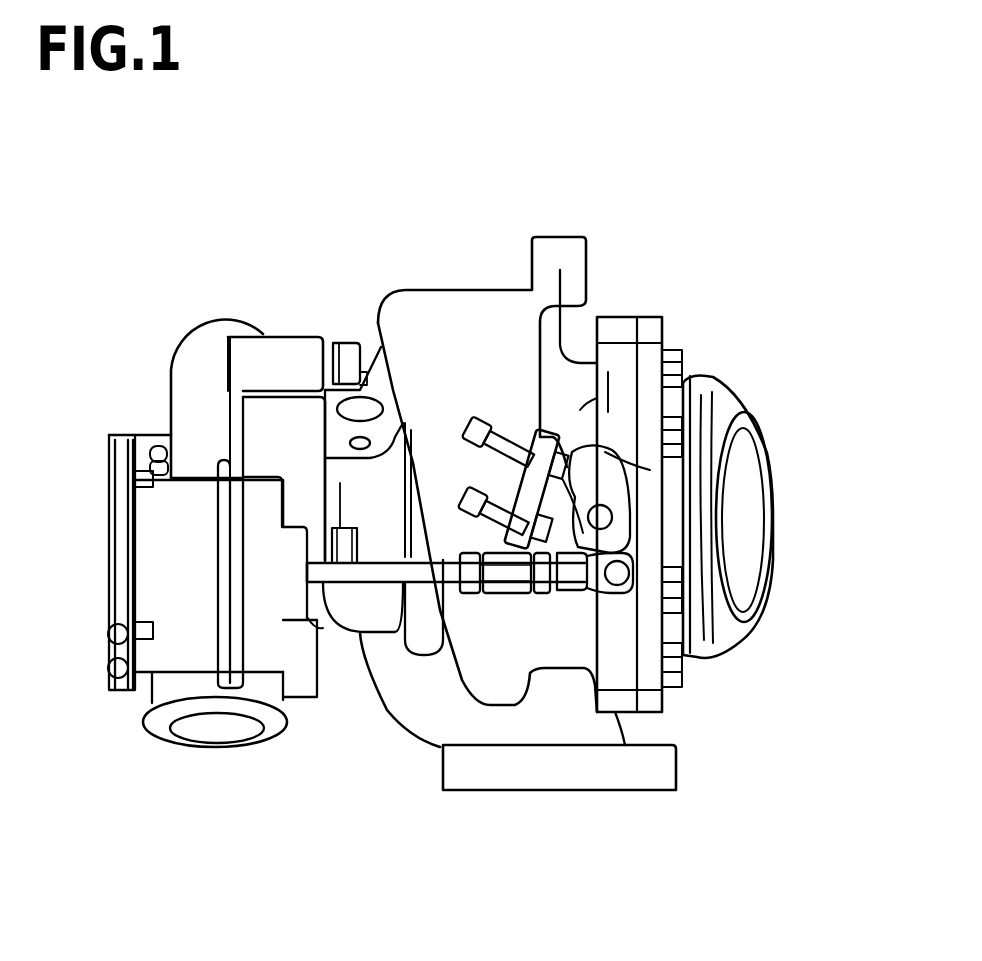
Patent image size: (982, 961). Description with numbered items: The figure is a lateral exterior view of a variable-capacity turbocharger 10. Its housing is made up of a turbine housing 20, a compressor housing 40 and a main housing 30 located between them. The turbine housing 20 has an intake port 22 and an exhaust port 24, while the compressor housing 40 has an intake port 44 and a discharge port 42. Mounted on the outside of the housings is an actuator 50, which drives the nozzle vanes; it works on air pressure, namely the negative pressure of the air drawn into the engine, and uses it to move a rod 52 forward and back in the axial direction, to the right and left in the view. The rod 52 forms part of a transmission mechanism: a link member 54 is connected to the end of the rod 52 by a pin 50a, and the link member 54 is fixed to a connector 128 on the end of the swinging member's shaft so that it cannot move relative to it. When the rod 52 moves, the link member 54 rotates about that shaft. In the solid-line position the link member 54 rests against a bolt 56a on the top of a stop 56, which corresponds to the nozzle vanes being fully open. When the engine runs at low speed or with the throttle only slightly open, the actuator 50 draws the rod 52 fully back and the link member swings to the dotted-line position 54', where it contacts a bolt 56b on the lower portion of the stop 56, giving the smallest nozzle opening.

The variable-capacity turbocharger 10 is at (477, 158).
The turbine housing 20 is at (447, 272).
The intake port 22 is at (625, 776).
The exhaust port 24 is at (760, 497).
The main housing 30 is at (357, 330).
The compressor housing 40 is at (230, 283).
The discharge port 42 is at (215, 733).
The intake port 44 is at (108, 440).
The actuator 50 is at (175, 643).
The pin 50a is at (663, 620).
The rod 52 is at (356, 584).
The link member 54 is at (654, 426).
The link member (retracted position) 54' is at (718, 447).
The stop 56 is at (523, 413).
The bolt 56a is at (480, 434).
The bolt 56b is at (470, 515).
The connector 128 is at (615, 525).